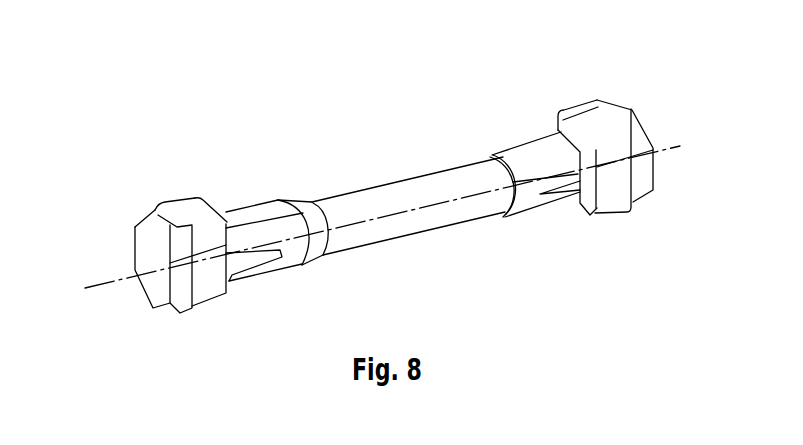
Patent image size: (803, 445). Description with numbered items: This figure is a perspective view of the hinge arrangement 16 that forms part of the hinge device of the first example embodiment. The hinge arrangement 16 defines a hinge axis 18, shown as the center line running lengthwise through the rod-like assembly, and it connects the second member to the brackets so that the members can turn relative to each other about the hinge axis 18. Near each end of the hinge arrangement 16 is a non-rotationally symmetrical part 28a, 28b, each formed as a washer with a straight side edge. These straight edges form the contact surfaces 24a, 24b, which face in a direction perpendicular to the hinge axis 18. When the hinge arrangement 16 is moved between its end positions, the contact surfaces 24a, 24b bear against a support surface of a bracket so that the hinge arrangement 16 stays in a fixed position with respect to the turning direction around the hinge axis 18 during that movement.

The hinge arrangement 16 is at (362, 128).
The hinge axis 18 is at (112, 283).
The contact surface 24a is at (187, 215).
The contact surface 24b is at (597, 142).
The non-rotationally symmetrical part 28a is at (208, 238).
The non-rotationally symmetrical part 28b is at (594, 113).